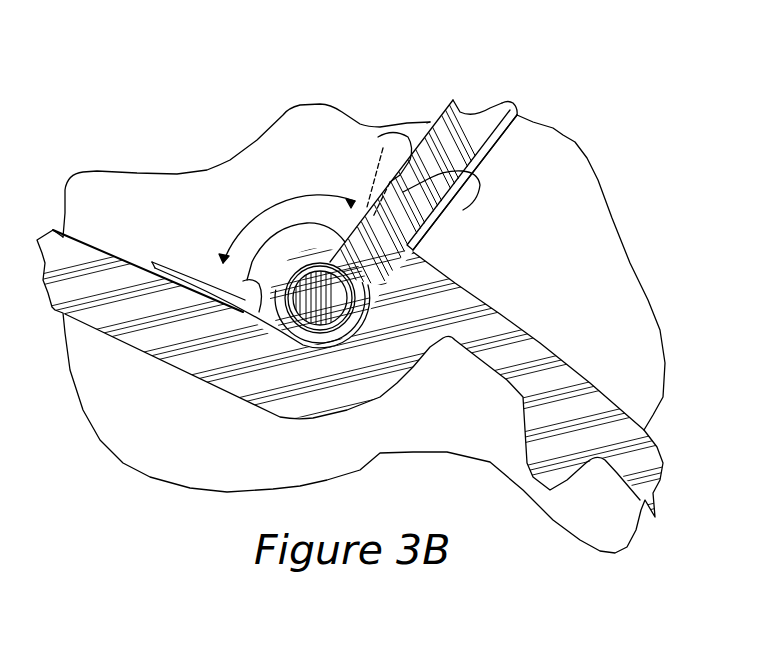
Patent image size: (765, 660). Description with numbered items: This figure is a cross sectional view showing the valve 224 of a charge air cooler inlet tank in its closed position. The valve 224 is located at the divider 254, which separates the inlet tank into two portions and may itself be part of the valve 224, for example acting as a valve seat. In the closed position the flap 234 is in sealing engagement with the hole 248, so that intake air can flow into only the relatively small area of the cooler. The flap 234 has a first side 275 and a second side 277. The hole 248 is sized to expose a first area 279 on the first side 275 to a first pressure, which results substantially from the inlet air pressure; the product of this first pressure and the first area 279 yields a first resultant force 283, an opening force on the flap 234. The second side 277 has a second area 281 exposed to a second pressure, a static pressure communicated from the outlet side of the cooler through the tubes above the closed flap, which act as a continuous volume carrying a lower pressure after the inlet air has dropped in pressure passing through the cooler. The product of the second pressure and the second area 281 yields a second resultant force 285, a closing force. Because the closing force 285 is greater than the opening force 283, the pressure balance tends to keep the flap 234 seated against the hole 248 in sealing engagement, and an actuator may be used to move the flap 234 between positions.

The valve 224 is at (443, 162).
The flap 234 is at (442, 126).
The hole 248 is at (490, 142).
The divider 254 is at (243, 281).
The first side 275 is at (441, 203).
The second side 277 is at (407, 122).
The first area 279 is at (563, 143).
The second area 281 is at (422, 40).
The first resultant force 283 is at (490, 141).
The second resultant force 285 is at (424, 122).